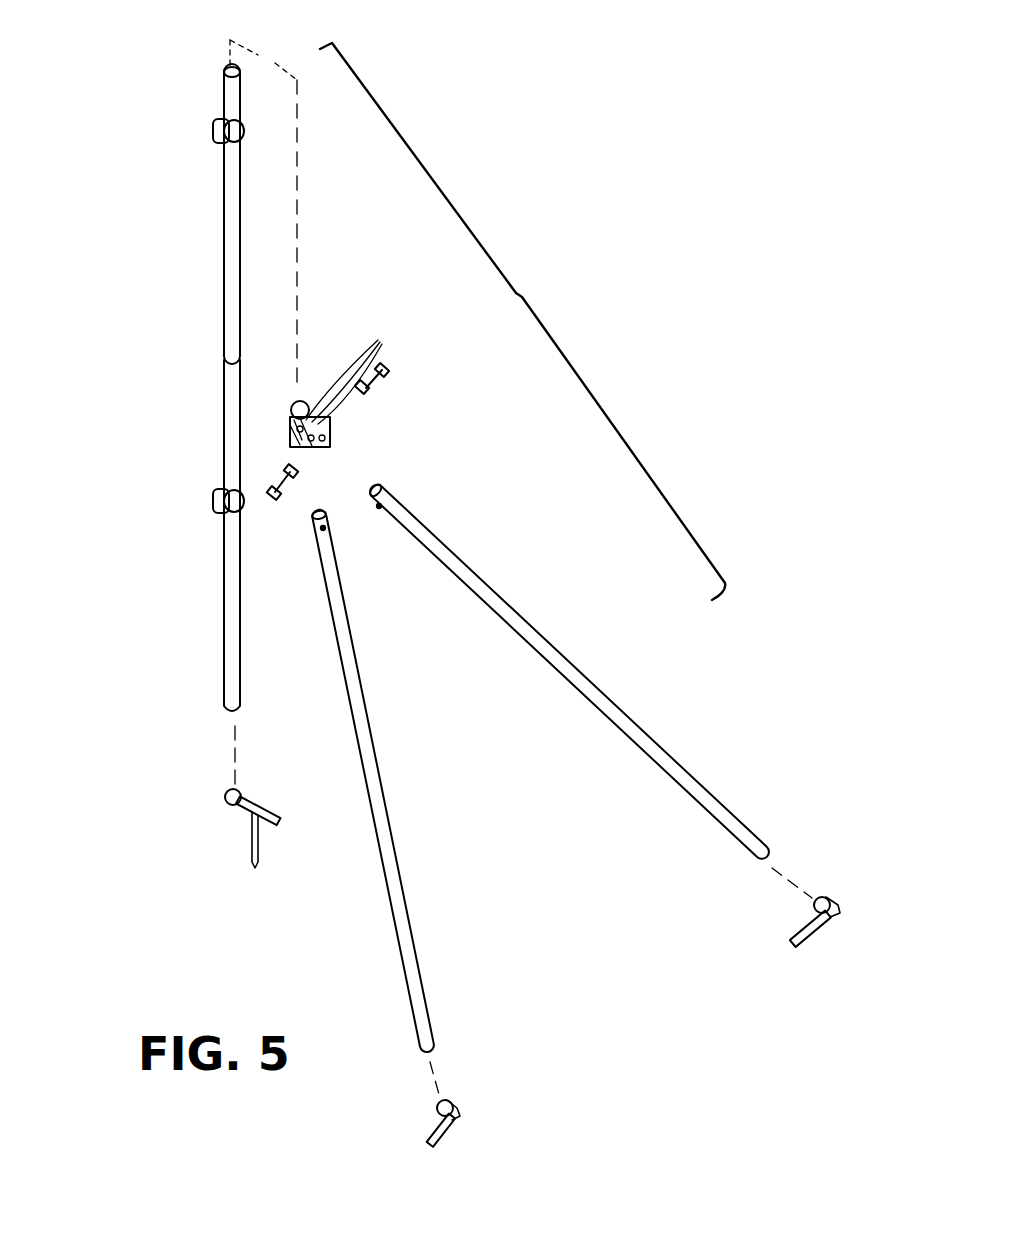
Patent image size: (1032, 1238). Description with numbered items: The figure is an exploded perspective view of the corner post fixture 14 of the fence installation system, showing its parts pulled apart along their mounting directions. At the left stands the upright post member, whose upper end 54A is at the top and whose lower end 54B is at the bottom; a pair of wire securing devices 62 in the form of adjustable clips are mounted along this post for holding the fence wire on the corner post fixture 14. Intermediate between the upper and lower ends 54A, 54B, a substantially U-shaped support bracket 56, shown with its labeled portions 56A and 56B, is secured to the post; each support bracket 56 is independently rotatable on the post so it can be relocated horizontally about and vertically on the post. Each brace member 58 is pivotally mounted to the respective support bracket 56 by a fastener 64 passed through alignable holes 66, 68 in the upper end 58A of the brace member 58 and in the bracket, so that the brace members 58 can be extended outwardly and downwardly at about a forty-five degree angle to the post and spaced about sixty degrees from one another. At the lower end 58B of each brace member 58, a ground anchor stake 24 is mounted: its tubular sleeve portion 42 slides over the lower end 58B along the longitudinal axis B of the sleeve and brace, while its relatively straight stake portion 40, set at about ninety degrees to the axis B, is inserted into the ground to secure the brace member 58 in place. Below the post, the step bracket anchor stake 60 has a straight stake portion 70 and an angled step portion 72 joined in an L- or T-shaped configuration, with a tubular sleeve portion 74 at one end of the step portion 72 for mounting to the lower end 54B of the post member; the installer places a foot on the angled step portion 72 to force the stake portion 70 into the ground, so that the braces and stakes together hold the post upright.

The corner post fixture 14 is at (542, 288).
The ground anchor stake 24 is at (470, 1106).
The stake portion 40 is at (440, 1146).
The tubular sleeve portion 42 is at (438, 1118).
The upper end 54A is at (224, 88).
The lower end 54B is at (232, 702).
The support bracket 56 is at (306, 400).
The connector first opening 56A is at (292, 428).
The connector second openings 56B is at (330, 441).
The brace member 58 is at (378, 762).
The upper end 58A is at (400, 590).
The lower end 58B is at (760, 838).
The step bracket anchor stake 60 is at (256, 790).
The wire securing device 62 is at (213, 133).
The fastener 64 is at (388, 385).
The hole 66 is at (378, 506).
The hole 68 is at (355, 368).
The straight stake portion 70 is at (258, 853).
The angled step portion 72 is at (268, 815).
The tubular sleeve portion 74 is at (228, 808).
The longitudinal axis B is at (233, 742).